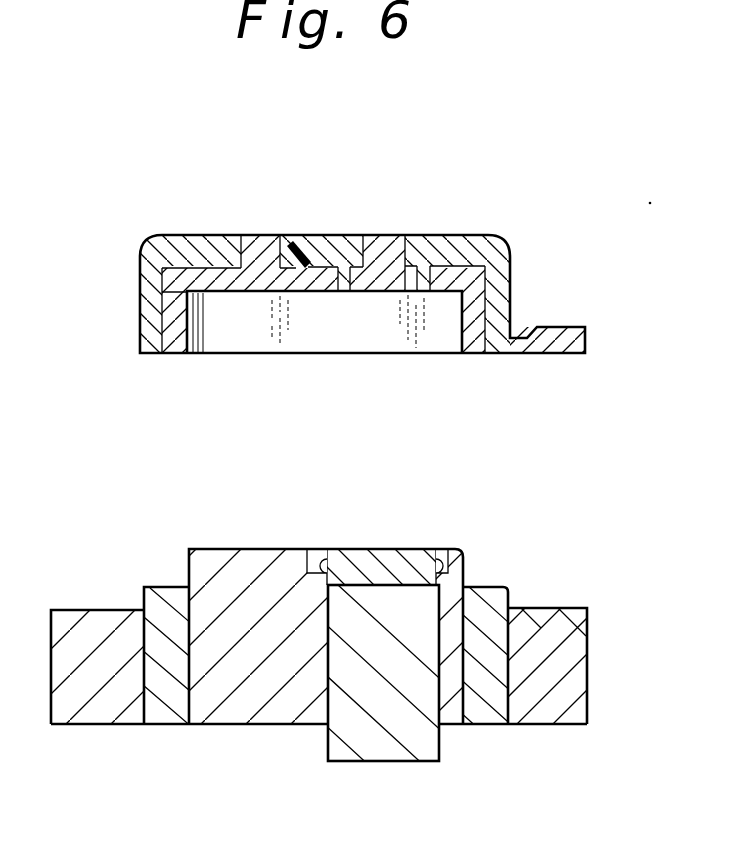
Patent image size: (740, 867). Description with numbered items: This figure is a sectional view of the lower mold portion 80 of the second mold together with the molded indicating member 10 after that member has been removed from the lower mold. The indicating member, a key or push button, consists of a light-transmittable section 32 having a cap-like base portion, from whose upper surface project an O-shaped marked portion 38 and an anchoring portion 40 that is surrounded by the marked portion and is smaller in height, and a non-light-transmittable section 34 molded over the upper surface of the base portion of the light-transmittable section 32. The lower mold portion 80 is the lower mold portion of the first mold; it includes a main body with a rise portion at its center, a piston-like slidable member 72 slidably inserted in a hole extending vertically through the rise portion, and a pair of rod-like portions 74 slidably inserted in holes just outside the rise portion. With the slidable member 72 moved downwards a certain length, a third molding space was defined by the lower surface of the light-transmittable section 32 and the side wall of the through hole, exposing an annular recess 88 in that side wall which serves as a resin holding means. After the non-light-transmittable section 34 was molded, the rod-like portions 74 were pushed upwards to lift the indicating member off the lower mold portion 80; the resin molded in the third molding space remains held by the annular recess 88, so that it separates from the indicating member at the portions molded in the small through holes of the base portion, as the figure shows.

The housing assembly 10 is at (326, 261).
The light-transmittable section 32 is at (162, 330).
The non-light-transmittable section 34 is at (174, 246).
The marked portion 38 is at (390, 246).
The anchoring portion 40 is at (292, 244).
The piston-like slidable member 72 is at (370, 742).
The rod-like portions 74 is at (168, 715).
The lower mold portion 80 is at (355, 649).
The annular recess 88 is at (316, 562).